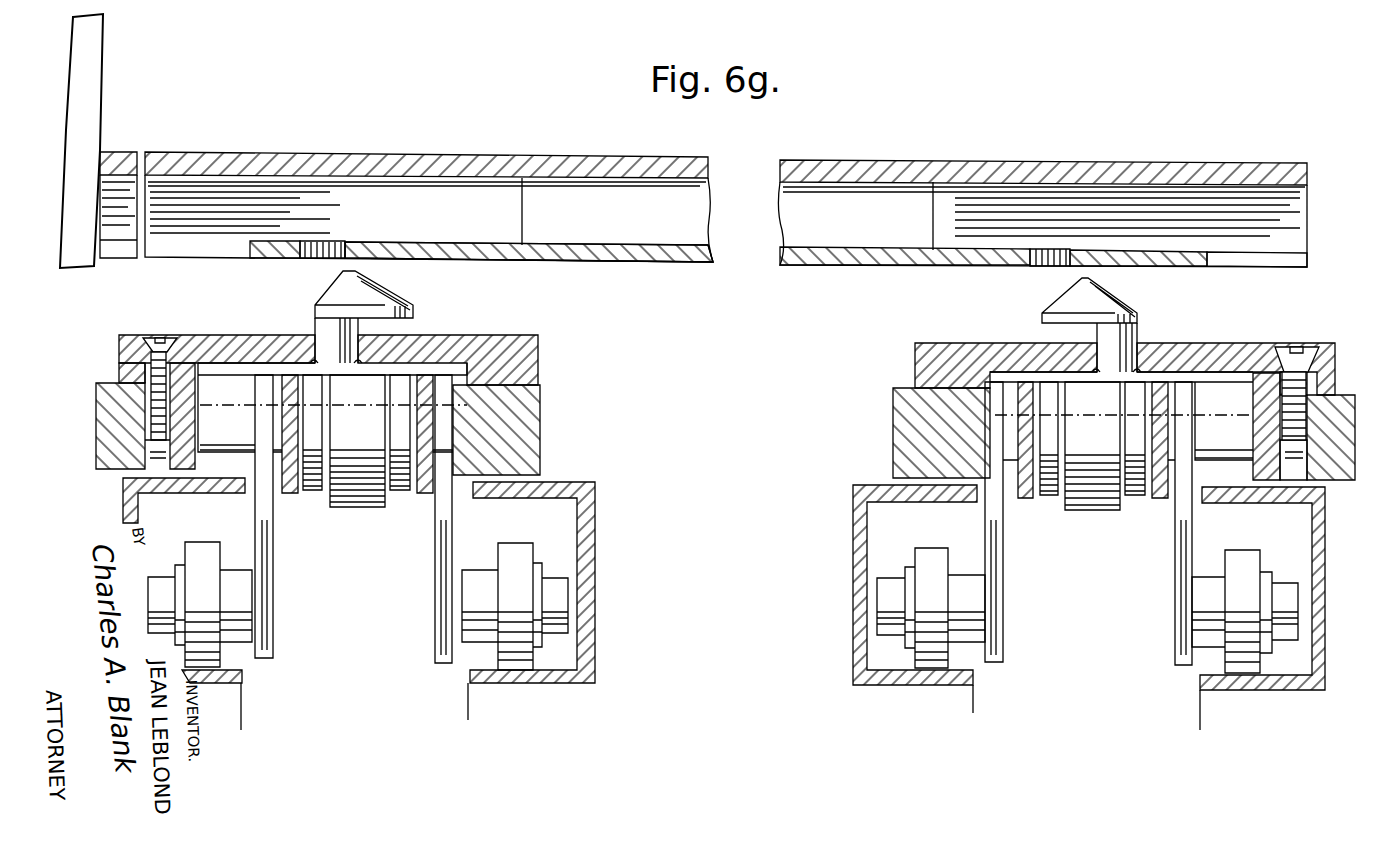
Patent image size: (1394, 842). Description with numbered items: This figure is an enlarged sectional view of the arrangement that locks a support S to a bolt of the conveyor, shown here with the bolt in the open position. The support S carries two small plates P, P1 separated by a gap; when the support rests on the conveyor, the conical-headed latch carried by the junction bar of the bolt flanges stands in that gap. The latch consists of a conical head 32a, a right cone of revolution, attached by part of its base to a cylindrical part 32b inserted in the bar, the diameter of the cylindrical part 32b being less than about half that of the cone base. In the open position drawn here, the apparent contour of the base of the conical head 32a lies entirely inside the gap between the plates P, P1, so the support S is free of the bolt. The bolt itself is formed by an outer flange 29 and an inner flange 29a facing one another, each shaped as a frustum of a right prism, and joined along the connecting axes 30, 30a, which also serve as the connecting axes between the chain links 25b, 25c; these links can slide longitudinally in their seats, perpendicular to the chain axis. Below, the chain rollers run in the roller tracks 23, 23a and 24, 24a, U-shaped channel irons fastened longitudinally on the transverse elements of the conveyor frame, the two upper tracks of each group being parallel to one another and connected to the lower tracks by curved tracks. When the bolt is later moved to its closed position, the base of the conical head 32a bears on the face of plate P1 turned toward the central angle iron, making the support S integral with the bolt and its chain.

The support S is at (597, 166).
The small plate P is at (283, 243).
The small plate P1 is at (583, 263).
The upper roller track 23 is at (230, 497).
The upper roller track 23a is at (490, 497).
The roller track 24 is at (907, 500).
The roller track 24a is at (1268, 503).
The chain link 25b is at (303, 495).
The chain link 25c is at (393, 495).
The outer flange 29 is at (100, 383).
The inner flange 29a is at (556, 402).
The connecting axis 30 is at (219, 412).
The connecting axis 30a is at (1226, 426).
The conical head 32a is at (393, 293).
The cylindrical part 32b is at (322, 327).